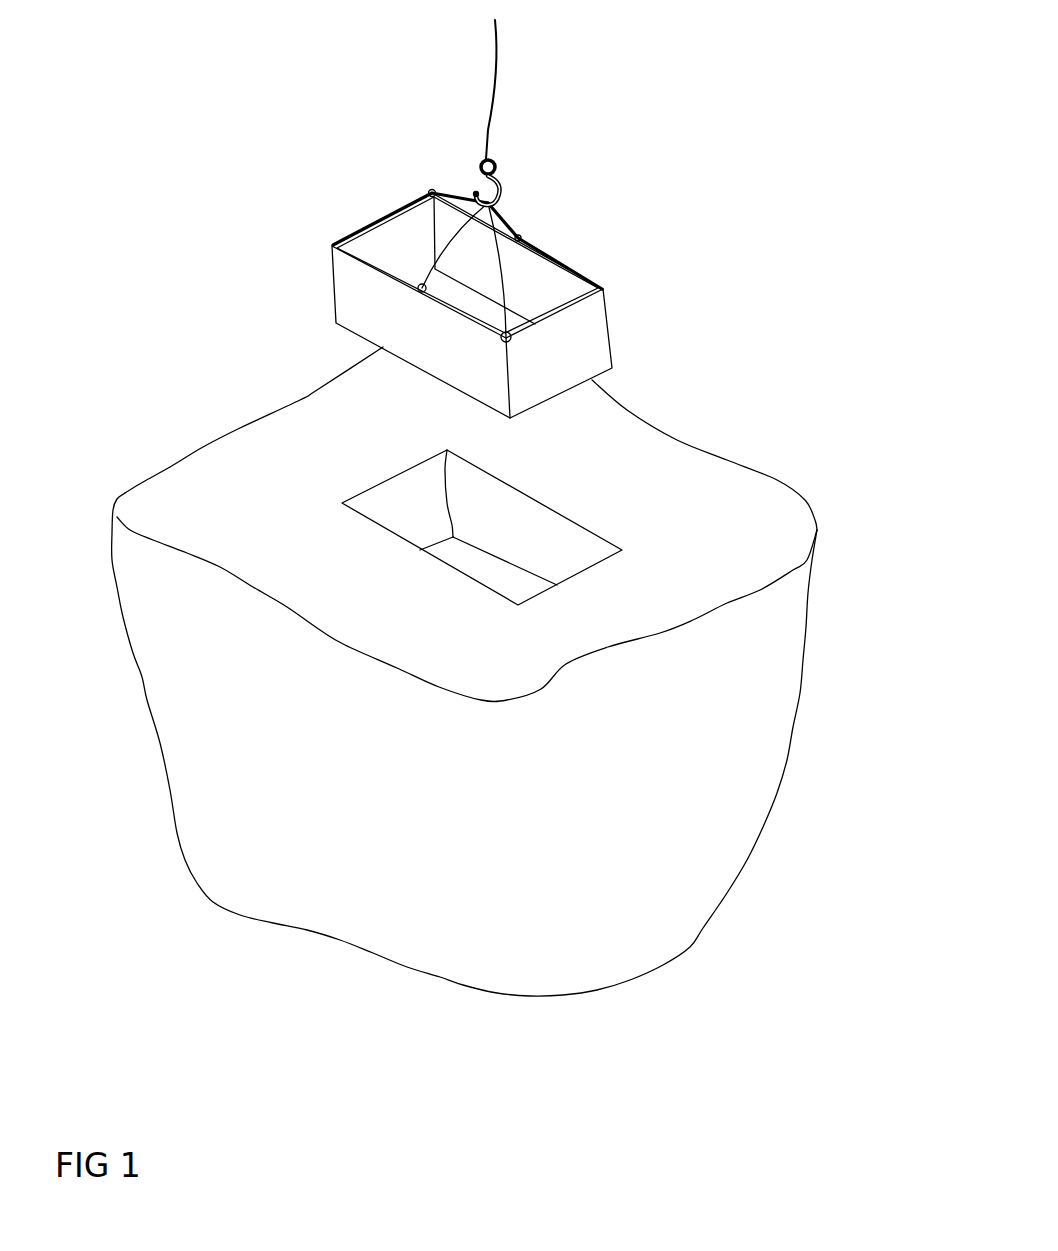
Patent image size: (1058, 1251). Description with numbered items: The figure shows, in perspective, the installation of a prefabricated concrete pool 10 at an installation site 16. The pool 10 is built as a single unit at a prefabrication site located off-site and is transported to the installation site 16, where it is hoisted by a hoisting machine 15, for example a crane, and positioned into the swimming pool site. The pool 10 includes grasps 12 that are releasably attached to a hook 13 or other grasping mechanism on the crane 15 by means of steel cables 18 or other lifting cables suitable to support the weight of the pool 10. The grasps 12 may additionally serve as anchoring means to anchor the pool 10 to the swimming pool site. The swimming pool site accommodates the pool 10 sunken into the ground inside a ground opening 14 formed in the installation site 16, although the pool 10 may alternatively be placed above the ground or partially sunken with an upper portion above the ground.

The prefabricated concrete pool 10 is at (599, 332).
The grasps 12 is at (600, 281).
The hook 13 is at (497, 192).
The ground opening 14 is at (413, 488).
The hoisting machine 15 is at (493, 83).
The installation site 16 is at (152, 583).
The steel cables 18 is at (537, 250).